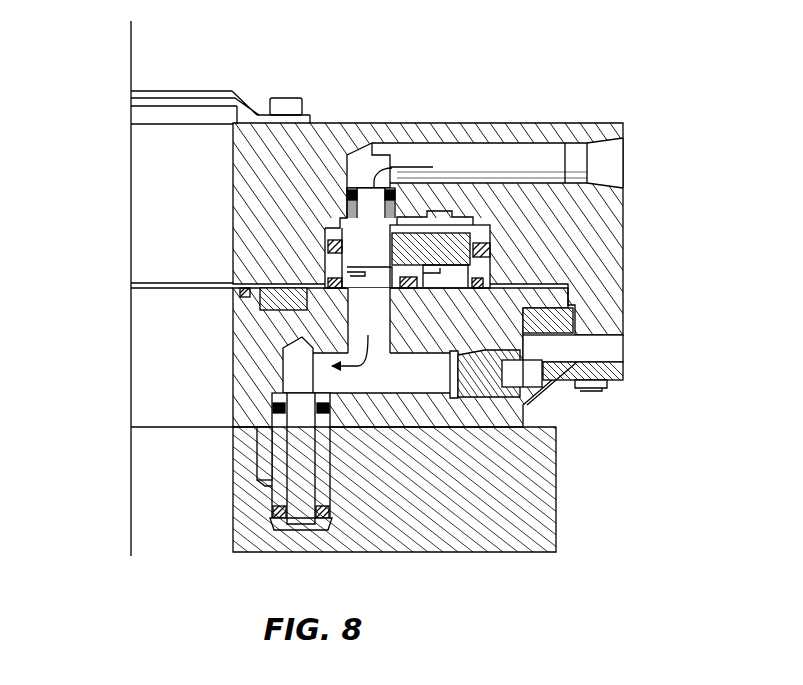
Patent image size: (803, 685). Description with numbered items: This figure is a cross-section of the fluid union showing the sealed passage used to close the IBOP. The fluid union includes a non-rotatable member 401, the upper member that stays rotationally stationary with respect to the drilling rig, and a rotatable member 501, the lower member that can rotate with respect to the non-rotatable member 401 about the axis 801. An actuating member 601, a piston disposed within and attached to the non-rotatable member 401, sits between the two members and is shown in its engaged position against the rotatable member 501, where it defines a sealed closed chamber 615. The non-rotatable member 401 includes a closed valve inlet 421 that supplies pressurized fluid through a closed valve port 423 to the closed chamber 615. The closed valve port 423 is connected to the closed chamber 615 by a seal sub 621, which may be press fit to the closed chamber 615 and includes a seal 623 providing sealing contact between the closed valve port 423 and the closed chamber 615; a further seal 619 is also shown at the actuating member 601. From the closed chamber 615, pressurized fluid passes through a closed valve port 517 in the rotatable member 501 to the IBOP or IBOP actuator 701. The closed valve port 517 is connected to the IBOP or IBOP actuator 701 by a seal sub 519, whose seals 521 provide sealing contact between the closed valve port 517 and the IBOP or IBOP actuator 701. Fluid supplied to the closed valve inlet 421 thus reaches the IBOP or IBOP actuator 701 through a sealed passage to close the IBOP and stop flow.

The axis 801 is at (130, 70).
The non-rotatable member 401 is at (250, 165).
The closed valve port 423 is at (510, 148).
The closed valve inlet 421 is at (623, 163).
The seal sub 621 is at (353, 185).
The seal 623 is at (345, 215).
The seal 619 is at (397, 197).
The actuating member 601 is at (476, 270).
The closed chamber 615 is at (372, 280).
The closed valve port 517 is at (313, 360).
The seals 521 is at (272, 405).
The seal sub 519 is at (315, 515).
The rotatable member 501 is at (512, 420).
The IBOP or IBOP actuator 701 is at (545, 478).